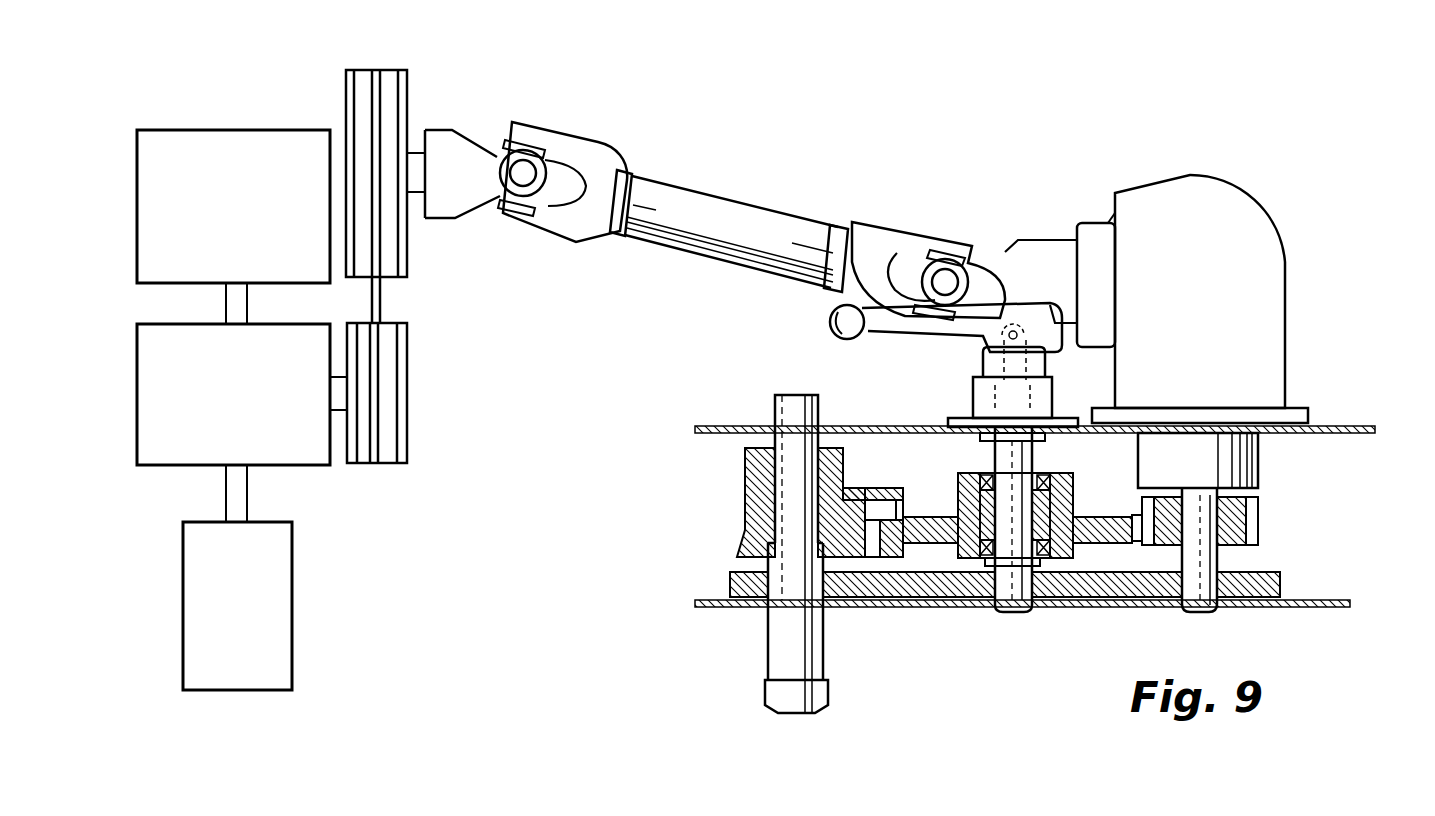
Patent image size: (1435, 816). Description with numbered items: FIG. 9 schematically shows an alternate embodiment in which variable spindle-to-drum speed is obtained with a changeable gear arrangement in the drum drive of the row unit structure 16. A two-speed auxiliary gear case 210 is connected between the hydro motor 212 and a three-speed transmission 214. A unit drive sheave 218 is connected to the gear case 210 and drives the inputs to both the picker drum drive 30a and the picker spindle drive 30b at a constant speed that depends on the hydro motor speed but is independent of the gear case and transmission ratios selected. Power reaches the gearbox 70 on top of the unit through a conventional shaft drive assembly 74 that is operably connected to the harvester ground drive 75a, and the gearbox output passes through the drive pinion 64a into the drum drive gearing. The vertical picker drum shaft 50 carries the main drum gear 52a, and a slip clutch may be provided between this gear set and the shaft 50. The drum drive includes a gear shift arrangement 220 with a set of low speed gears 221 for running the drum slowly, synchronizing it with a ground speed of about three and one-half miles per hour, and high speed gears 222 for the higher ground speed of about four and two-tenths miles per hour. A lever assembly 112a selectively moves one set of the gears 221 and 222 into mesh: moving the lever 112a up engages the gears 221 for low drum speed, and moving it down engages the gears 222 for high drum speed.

The harvester ground drive 75a is at (170, 96).
The three-speed transmission 214 is at (277, 130).
The two-speed auxiliary gear case 210 is at (137, 350).
The hydro motor 212 is at (183, 562).
The unit drive sheave 218 is at (361, 463).
The shaft drive assembly 74 is at (830, 190).
The lever assembly 112a is at (1000, 300).
The gearbox 70 is at (1292, 198).
The row unit structure 16 is at (1362, 340).
The picker drum drive 30a is at (1348, 464).
The picker spindle drive 30b is at (1312, 588).
The vertical picker drum shaft 50 is at (745, 470).
The main drum gear 52a is at (870, 488).
The low speed gears 221 is at (930, 520).
The high speed gears 222 is at (905, 545).
The gear shift arrangement 220 is at (965, 560).
The drive pinion 64a is at (1262, 513).